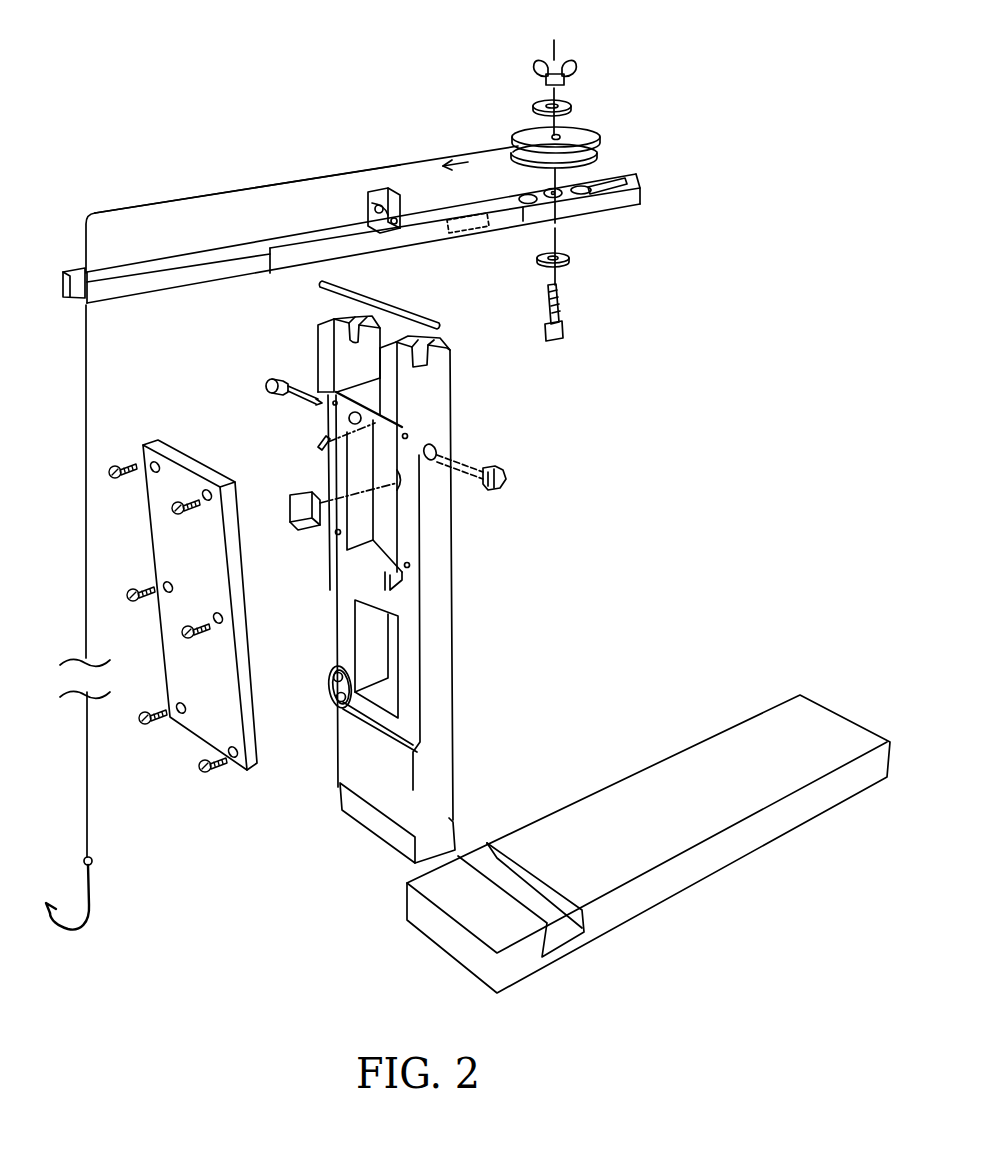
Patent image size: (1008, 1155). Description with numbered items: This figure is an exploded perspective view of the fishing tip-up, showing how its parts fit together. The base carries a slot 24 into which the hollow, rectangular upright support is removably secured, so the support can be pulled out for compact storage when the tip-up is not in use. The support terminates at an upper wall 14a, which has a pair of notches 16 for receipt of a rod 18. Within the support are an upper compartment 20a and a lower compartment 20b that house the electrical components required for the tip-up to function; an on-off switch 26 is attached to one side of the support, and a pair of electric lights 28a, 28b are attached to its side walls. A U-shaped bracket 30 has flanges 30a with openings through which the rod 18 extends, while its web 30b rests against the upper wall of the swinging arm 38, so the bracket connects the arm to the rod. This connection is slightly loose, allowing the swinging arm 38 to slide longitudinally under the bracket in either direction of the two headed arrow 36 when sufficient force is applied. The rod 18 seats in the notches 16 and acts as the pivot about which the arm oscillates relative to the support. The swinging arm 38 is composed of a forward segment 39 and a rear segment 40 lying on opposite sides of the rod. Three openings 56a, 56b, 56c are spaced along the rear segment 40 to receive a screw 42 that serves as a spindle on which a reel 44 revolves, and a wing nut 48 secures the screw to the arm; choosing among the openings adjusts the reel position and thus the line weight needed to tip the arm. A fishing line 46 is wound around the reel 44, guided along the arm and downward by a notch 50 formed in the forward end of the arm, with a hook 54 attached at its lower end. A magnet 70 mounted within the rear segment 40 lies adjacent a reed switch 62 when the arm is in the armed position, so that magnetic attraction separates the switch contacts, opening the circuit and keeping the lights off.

The upper wall 14a is at (320, 322).
The notches 16 is at (368, 318).
The rod 18 is at (348, 291).
The upper compartment 20a is at (392, 476).
The lower compartment 20b is at (388, 644).
The slot 24 is at (518, 878).
The on-off switch 26 is at (302, 533).
The electric light 28a is at (265, 385).
The electric light 28b is at (510, 480).
The U-shaped bracket 30 is at (400, 195).
The flanges 30a is at (372, 203).
The web 30b is at (372, 190).
The two headed arrow 36 is at (345, 190).
The swinging arm 38 is at (152, 267).
The forward segment 39 is at (125, 300).
The rear segment 40 is at (597, 213).
The screw 42 is at (565, 312).
The reel 44 is at (566, 142).
The fishing line 46 is at (238, 197).
The wing nut 48 is at (548, 57).
The notch 50 is at (72, 298).
The hook 54 is at (90, 890).
The opening 56a is at (533, 195).
The opening 56b is at (557, 189).
The opening 56c is at (610, 186).
The reed switch 62 is at (314, 441).
The magnet 70 is at (450, 228).